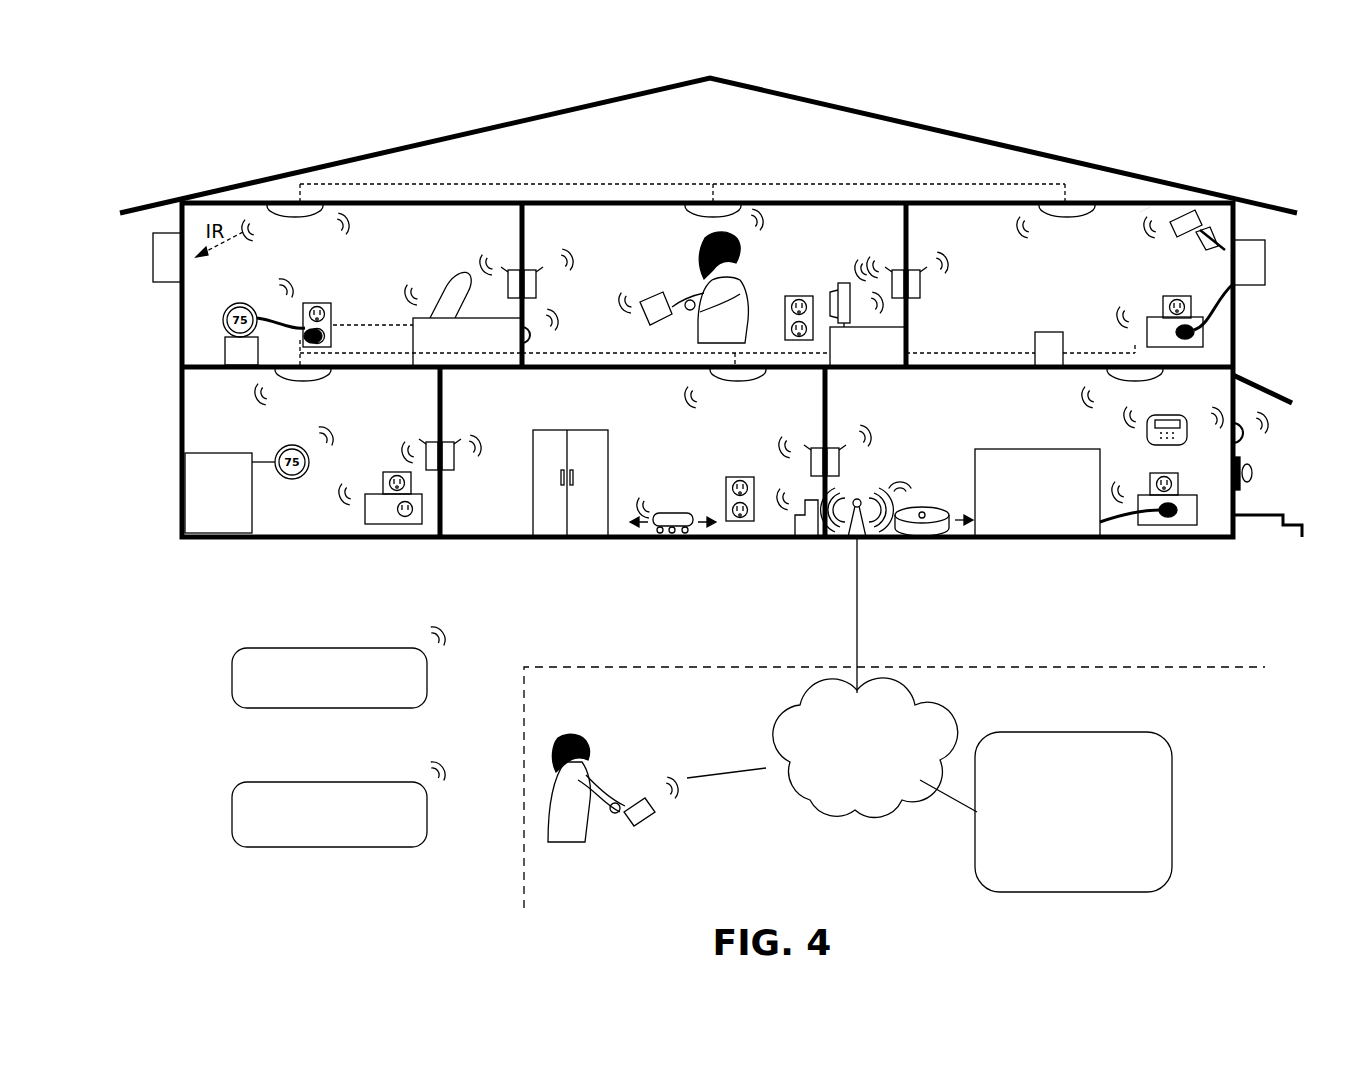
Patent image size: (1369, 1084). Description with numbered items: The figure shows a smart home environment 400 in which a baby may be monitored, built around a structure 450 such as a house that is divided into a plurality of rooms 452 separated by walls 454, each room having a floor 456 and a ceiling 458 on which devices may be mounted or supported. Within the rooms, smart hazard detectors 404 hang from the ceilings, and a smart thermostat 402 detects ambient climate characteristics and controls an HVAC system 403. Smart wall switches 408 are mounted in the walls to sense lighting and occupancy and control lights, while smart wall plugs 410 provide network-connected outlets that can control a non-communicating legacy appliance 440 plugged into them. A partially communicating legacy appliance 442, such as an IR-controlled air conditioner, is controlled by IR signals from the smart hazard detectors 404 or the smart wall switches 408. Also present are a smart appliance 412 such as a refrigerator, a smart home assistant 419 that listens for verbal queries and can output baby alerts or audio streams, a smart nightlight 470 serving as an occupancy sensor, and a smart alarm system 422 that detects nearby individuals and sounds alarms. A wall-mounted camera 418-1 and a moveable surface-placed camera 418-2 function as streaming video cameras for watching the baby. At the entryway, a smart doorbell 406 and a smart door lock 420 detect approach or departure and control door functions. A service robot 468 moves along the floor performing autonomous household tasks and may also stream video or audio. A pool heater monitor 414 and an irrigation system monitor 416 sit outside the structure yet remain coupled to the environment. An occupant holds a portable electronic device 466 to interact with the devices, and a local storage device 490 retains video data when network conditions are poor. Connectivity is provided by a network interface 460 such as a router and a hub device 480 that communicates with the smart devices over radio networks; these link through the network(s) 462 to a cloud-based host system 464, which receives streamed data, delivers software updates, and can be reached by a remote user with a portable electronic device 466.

The smart home environment 400 is at (127, 118).
The smart thermostat 402 is at (292, 481).
The HVAC system 403 is at (207, 453).
The smart hazard detector 404 is at (293, 204).
The smart doorbell 406 is at (1244, 435).
The smart wall switch 408 is at (447, 472).
The smart wall plug 410 is at (382, 511).
The smart appliance 412 is at (552, 522).
The pool heater monitor 414 is at (232, 678).
The irrigation system monitor 416 is at (232, 810).
The camera 418-1 is at (1170, 232).
The camera 418-2 is at (838, 290).
The smart home assistant 419 is at (455, 287).
The smart door lock 420 is at (1256, 470).
The smart alarm system 422 is at (1170, 415).
The legacy appliance 440 is at (1252, 272).
The partially communicating legacy appliance 442 is at (160, 275).
The structure 450 is at (432, 136).
The room 452 is at (1138, 216).
The wall 454 is at (904, 230).
The floor 456 is at (522, 536).
The ceiling 458 is at (616, 369).
The network interface 460 is at (850, 539).
The network(s) 462 is at (950, 740).
The cloud-based host system 464 is at (1165, 885).
The portable electronic device 466 is at (668, 298).
The service robot 468 is at (668, 511).
The smart nightlight 470 is at (536, 340).
The hub device 480 is at (935, 508).
The local storage device 490 is at (1050, 332).